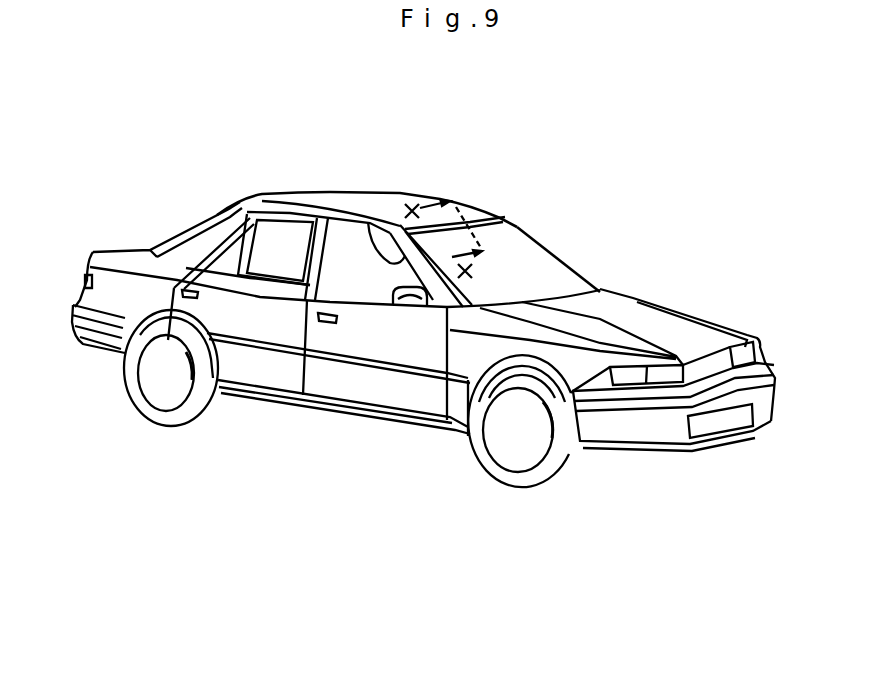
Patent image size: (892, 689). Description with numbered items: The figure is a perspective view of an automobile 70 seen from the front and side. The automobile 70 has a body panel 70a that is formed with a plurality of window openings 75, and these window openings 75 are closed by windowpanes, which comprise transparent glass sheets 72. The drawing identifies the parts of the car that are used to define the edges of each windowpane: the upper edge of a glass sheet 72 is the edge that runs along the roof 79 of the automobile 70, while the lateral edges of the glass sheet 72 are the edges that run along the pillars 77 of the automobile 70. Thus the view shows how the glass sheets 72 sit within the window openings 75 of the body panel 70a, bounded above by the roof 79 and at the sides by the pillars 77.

The automobile 70 is at (641, 232).
The body panel 70a is at (477, 207).
The glass sheet 72 is at (527, 255).
The window opening 75 is at (217, 215).
The pillar 77 is at (367, 215).
The roof 79 is at (392, 203).